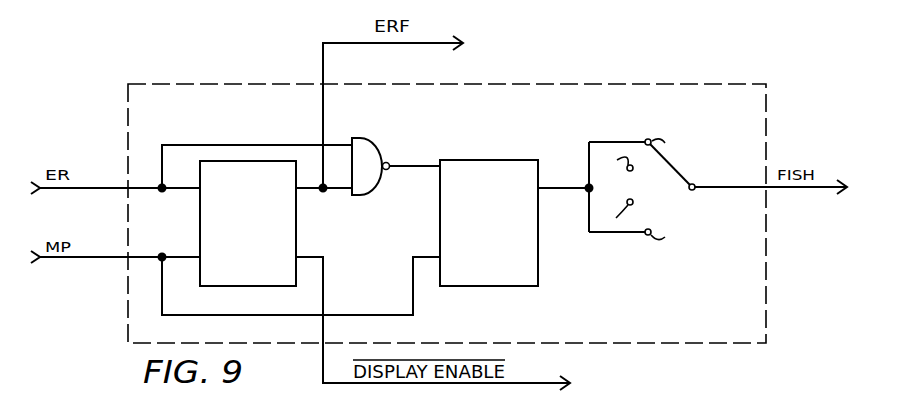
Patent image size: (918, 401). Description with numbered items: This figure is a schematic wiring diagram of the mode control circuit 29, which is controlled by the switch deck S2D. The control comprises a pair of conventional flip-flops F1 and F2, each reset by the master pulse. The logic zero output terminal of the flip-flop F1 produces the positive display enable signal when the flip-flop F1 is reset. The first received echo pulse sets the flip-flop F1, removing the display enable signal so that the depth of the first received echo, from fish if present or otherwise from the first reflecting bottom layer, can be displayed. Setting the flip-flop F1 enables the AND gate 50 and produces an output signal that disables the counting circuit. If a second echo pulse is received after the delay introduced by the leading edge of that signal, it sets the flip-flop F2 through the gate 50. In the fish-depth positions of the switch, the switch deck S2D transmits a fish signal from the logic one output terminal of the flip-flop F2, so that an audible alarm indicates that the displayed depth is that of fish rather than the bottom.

The mode control circuit 29 is at (538, 136).
The AND gate 50 is at (370, 158).
The flip-flop F1 is at (248, 223).
The flip-flop F2 is at (489, 223).
The switch deck S2D is at (642, 187).